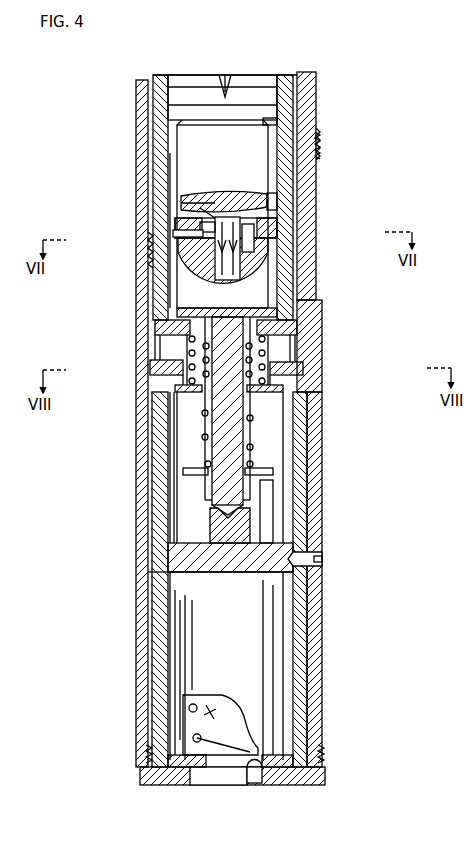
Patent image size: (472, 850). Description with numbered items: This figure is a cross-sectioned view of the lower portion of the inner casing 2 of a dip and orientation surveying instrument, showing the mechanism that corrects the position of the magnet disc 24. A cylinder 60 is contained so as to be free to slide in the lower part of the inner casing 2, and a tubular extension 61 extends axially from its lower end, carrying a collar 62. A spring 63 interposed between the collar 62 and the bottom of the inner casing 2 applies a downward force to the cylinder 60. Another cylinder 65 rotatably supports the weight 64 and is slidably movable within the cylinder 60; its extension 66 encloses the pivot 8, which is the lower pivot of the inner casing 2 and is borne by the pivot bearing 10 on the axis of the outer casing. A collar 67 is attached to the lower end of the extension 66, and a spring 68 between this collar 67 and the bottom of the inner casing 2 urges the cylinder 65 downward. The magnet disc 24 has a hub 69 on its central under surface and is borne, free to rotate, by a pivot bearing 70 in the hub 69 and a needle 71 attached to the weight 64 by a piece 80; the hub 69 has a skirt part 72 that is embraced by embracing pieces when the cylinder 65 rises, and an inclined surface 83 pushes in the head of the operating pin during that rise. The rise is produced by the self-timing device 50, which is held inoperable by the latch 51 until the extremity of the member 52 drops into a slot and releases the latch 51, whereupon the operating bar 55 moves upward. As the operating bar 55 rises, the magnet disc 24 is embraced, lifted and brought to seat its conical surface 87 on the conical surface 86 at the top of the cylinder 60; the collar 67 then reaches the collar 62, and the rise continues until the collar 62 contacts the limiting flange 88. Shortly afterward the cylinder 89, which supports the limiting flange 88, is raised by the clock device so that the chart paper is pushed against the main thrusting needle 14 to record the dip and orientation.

The inner casing 2 is at (305, 270).
The pivot 8 is at (230, 440).
The pivot bearing 10 is at (243, 525).
The main thrusting needle 14 is at (228, 96).
The magnet disc 24 is at (162, 173).
The self-timing device 50 is at (262, 667).
The latch 51 is at (222, 714).
The member 52 is at (256, 776).
The operating bar 55 is at (270, 534).
The cylinder 60 is at (312, 143).
The tubular extension 61 is at (288, 325).
The collar 62 is at (275, 383).
The spring 63 is at (258, 346).
The weight 64 is at (270, 223).
The cylinder 65 is at (267, 250).
The extension 66 is at (250, 405).
The collar 67 is at (185, 473).
The spring 68 is at (208, 435).
The hub 69 is at (188, 203).
The pivot bearing 70 is at (210, 213).
The needle 71 is at (200, 208).
The skirt part 72 is at (207, 240).
The piece 80 is at (200, 272).
The inclined surface 83 is at (197, 224).
The conical surface 86 is at (272, 118).
The conical surface 87 is at (272, 196).
The limiting flange 88 is at (163, 372).
The cylinder 89 is at (163, 586).